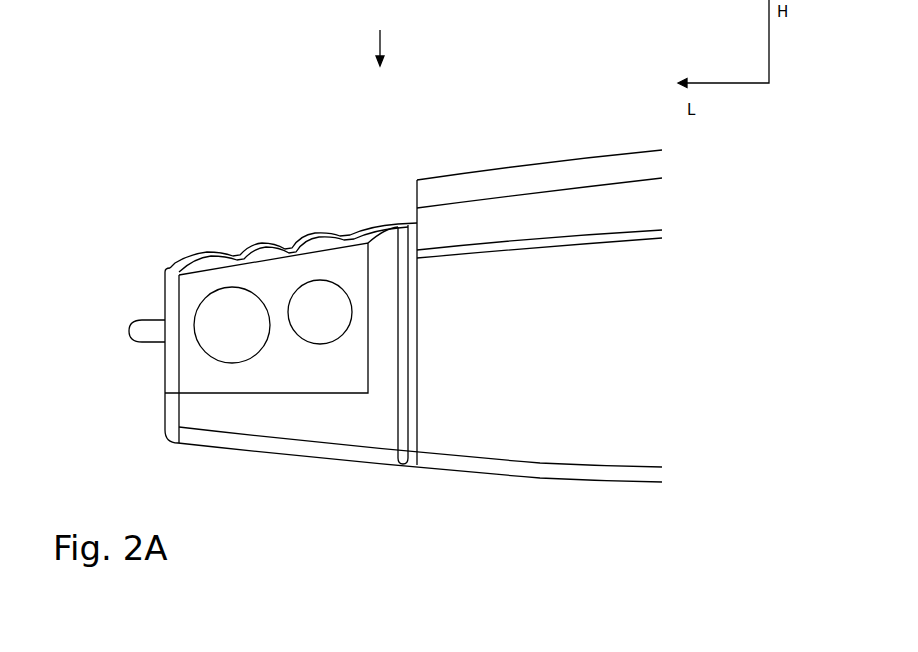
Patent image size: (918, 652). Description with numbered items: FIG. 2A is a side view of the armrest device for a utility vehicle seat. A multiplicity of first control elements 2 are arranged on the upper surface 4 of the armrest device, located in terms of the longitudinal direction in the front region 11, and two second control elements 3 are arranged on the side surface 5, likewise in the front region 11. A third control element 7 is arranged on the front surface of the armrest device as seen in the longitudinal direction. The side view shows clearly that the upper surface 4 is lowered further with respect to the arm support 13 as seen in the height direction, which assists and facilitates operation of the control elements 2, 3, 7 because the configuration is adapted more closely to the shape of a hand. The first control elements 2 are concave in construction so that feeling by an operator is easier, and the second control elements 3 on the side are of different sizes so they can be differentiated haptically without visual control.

The first control elements 2 is at (322, 232).
The second control elements 3 is at (215, 345).
The upper surface 4 is at (356, 225).
The side surface 5 is at (365, 432).
The third control element 7 is at (145, 323).
The front region 11 is at (391, 48).
The arm support 13 is at (610, 151).